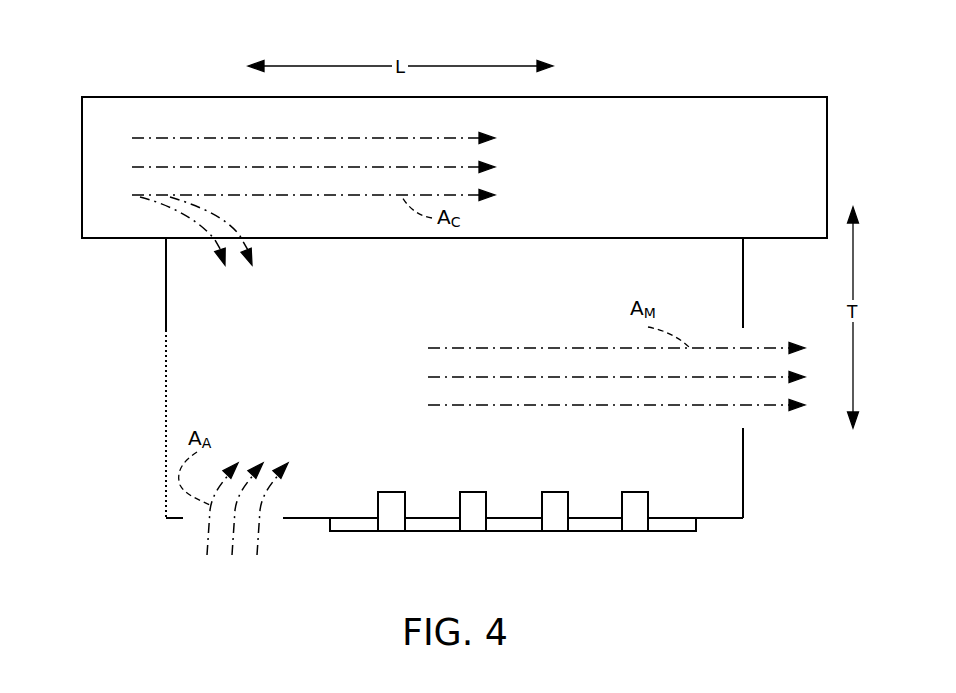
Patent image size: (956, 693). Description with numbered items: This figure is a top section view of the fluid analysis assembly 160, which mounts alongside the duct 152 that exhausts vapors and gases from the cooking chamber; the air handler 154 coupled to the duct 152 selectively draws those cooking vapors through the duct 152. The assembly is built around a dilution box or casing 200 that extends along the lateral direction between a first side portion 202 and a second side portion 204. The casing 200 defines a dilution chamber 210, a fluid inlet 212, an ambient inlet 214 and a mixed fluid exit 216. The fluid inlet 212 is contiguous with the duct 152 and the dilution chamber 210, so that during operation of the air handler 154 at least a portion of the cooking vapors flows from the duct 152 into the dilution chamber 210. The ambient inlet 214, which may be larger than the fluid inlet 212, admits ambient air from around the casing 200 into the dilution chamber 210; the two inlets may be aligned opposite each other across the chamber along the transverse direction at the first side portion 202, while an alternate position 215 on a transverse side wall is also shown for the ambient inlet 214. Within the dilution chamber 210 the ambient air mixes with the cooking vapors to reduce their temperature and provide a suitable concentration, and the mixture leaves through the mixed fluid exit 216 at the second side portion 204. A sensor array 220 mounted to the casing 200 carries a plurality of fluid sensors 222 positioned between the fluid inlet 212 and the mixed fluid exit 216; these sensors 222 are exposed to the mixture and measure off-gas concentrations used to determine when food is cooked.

The duct 152 is at (207, 97).
The air handler 154 is at (610, 140).
The fluid analysis assembly 160 is at (113, 483).
The casing 200 is at (745, 472).
The first side portion 202 is at (158, 540).
The second side portion 204 is at (756, 540).
The dilution chamber 210 is at (275, 327).
The fluid inlet 212 is at (270, 243).
The ambient inlet 214 is at (289, 540).
The alternate position 215 is at (152, 377).
The mixed fluid exit 216 is at (760, 317).
The sensor array 220 is at (678, 532).
The fluid sensors 222 is at (480, 492).